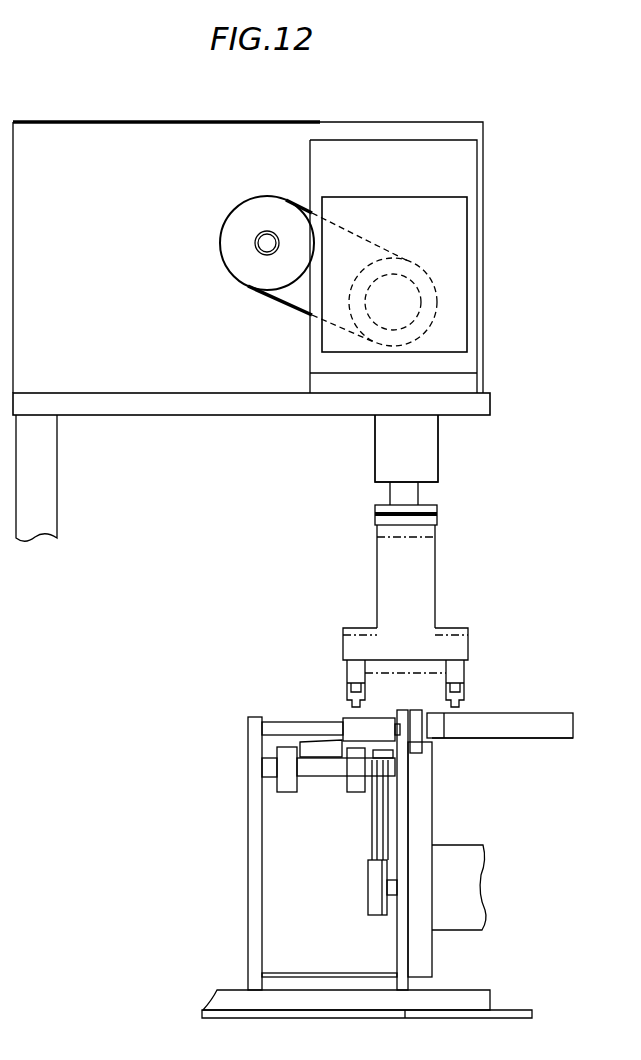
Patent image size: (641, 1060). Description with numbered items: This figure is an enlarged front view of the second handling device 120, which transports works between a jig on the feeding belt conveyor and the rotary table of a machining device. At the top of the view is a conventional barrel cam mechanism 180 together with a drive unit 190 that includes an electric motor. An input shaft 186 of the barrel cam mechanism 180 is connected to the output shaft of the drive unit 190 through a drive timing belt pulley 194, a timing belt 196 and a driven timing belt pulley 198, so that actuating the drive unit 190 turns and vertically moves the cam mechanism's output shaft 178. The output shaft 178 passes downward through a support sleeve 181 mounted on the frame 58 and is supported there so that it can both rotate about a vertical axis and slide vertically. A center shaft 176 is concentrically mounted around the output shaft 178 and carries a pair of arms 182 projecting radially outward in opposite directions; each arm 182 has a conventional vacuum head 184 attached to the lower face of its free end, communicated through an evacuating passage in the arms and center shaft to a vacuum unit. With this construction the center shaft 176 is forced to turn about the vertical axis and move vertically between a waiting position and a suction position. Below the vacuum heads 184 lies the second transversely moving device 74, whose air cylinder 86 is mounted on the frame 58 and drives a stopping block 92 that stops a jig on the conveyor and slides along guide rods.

The barrel cam mechanism 180 is at (285, 145).
The drive unit 190 is at (450, 177).
The input shaft 186 is at (262, 243).
The driven timing belt pulley 198 is at (238, 275).
The timing belt 196 is at (283, 307).
The drive timing belt pulley 194 is at (437, 299).
The frame 58 is at (149, 414).
The second handling device 120 is at (524, 437).
The support sleeve 181 is at (433, 443).
The output shaft 178 is at (418, 495).
The center shaft 176 is at (430, 560).
The arm 182 is at (360, 632).
The vacuum head 184 is at (352, 672).
The stopping block 92 is at (348, 722).
The air cylinder 86 is at (553, 718).
The second transversely moving device 74 is at (500, 740).